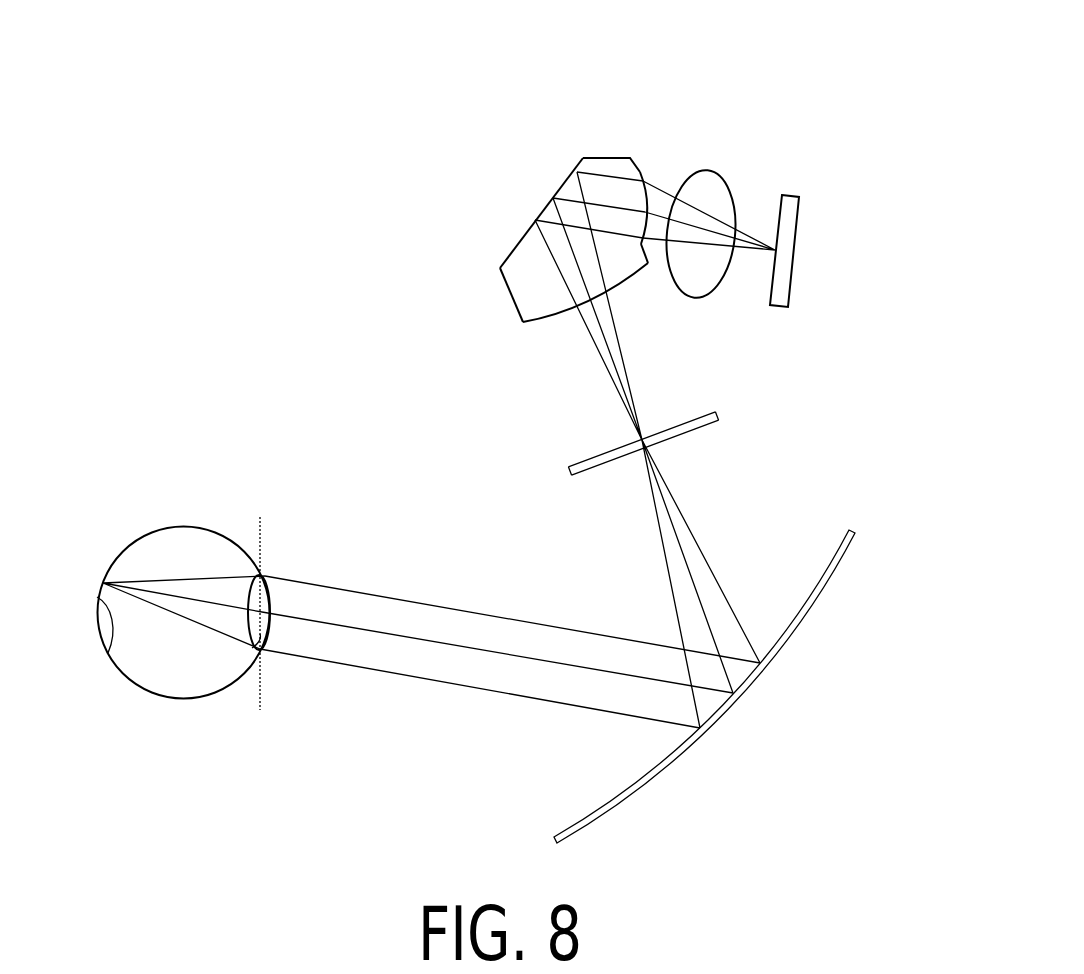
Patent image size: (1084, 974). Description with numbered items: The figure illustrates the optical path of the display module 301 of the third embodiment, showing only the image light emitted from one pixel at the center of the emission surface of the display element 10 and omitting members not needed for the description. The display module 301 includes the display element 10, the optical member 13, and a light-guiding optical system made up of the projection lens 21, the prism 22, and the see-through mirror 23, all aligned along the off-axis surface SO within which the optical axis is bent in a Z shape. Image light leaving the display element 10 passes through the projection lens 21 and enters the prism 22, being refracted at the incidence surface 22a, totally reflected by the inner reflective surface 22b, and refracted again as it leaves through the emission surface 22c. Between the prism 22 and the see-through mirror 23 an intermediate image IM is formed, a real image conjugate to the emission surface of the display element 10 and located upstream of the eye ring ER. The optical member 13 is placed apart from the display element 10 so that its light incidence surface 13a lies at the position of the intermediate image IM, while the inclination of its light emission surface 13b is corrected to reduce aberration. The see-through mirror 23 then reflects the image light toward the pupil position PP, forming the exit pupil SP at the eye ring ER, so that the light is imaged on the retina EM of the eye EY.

The display module 301 is at (733, 90).
The display element 10 is at (794, 198).
The projection lens 21 is at (713, 180).
The prism 22 is at (608, 165).
The incidence surface 22a is at (643, 174).
The inner reflective surface 22b is at (562, 182).
The emission surface 22c is at (552, 328).
The optical member 13 is at (715, 415).
The light incidence surface 13a is at (672, 418).
The light emission surface 13b is at (683, 440).
The intermediate image IM is at (618, 433).
The off-axis surface SO is at (800, 457).
The see-through mirror 23 is at (813, 600).
The eye EY is at (177, 542).
The pupil position PP is at (260, 530).
The eye ring ER is at (270, 596).
The retina EM is at (108, 653).
The exit pupil SP is at (252, 648).